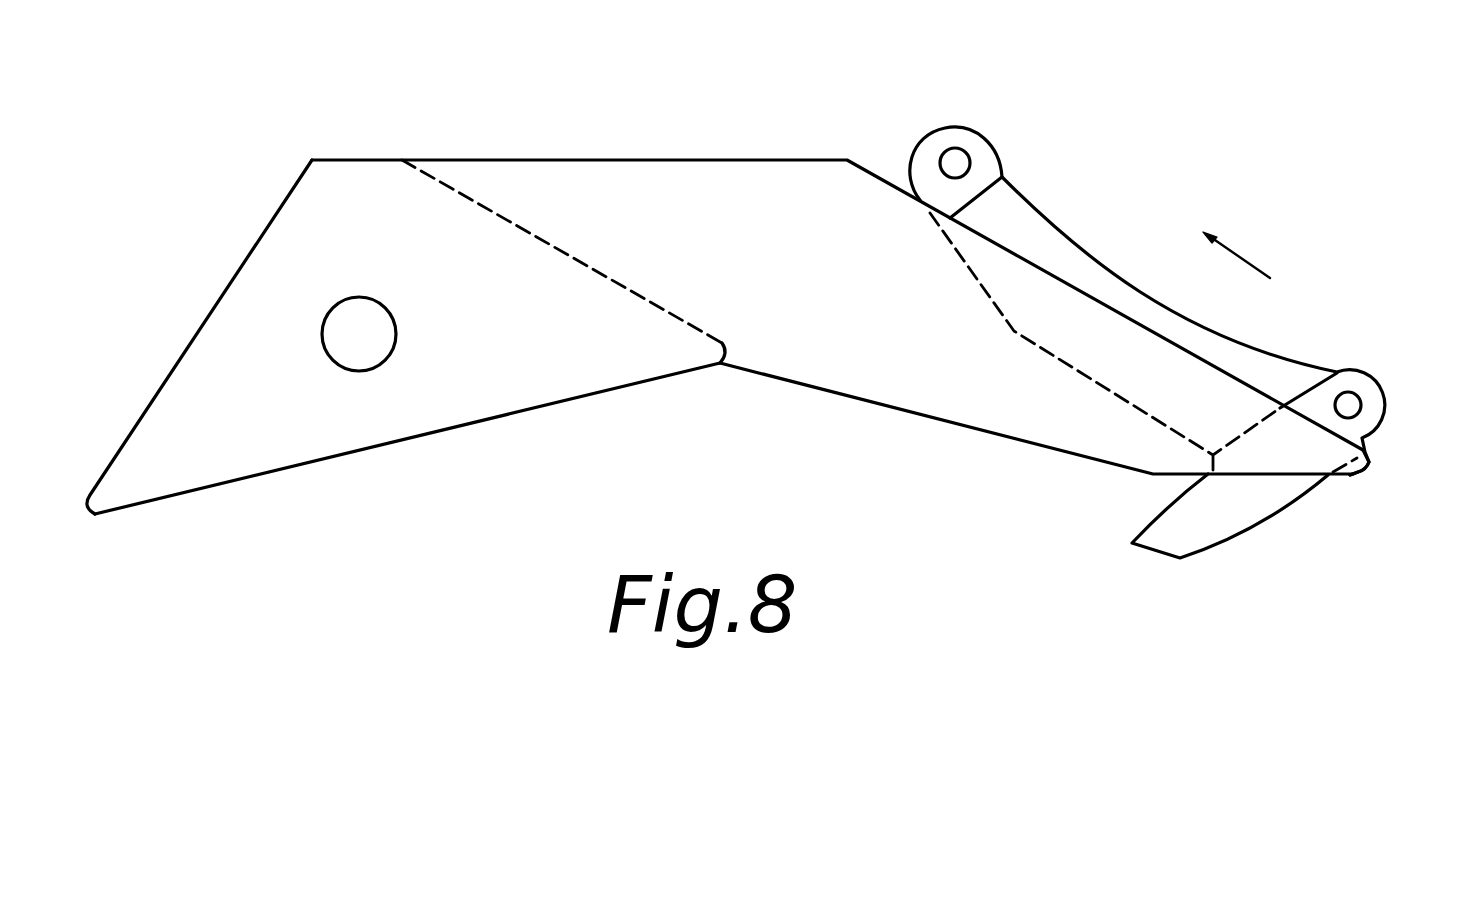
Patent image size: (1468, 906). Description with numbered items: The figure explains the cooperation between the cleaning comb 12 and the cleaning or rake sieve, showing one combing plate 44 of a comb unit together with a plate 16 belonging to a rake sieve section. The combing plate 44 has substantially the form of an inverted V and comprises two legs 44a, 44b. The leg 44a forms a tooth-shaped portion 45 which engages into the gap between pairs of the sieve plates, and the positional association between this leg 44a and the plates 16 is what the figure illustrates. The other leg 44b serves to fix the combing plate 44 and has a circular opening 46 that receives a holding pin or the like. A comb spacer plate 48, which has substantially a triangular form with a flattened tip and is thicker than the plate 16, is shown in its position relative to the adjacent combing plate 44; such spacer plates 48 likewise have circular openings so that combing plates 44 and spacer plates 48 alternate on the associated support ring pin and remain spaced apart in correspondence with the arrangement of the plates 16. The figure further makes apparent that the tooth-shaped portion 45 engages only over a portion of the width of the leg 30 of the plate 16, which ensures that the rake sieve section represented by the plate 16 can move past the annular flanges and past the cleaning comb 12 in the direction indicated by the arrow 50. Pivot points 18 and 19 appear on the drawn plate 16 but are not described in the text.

The cleaning comb 12 is at (739, 122).
The plate 16 is at (1260, 525).
The pivot pin 18 is at (955, 162).
The pivot pin 19 is at (1350, 407).
The leg 30 is at (1143, 295).
The combing plate 44 is at (848, 190).
The leg 44a is at (1078, 442).
The leg 44b is at (232, 272).
The tooth-shaped portion 45 is at (1358, 477).
The circular opening 46 is at (352, 312).
The comb spacer plate 48 is at (403, 220).
The arrow 50 is at (1270, 243).